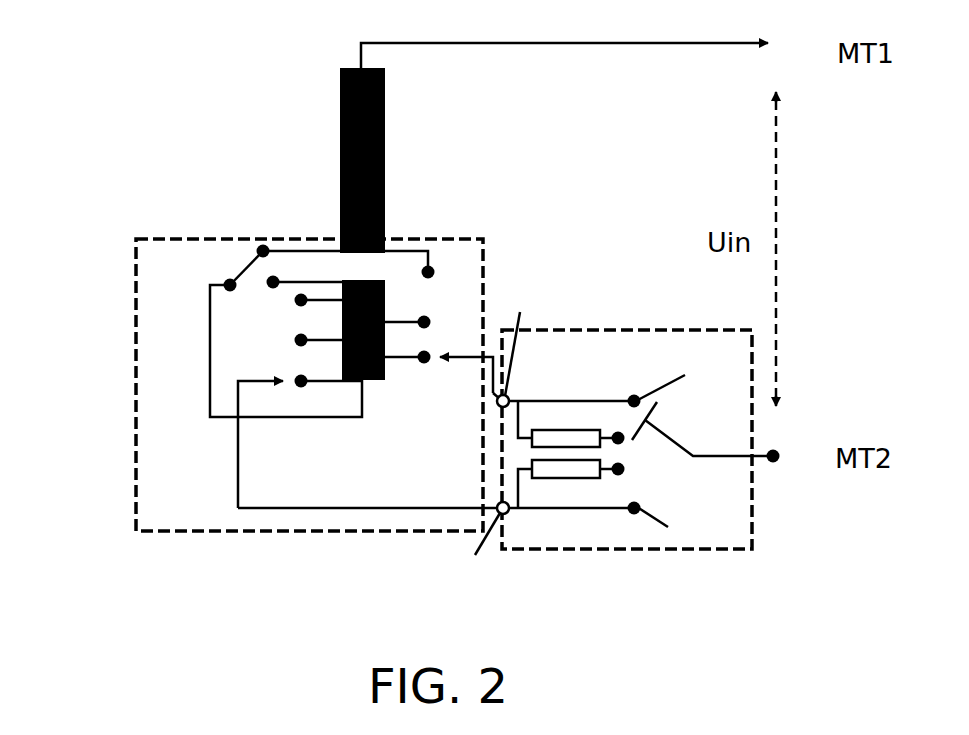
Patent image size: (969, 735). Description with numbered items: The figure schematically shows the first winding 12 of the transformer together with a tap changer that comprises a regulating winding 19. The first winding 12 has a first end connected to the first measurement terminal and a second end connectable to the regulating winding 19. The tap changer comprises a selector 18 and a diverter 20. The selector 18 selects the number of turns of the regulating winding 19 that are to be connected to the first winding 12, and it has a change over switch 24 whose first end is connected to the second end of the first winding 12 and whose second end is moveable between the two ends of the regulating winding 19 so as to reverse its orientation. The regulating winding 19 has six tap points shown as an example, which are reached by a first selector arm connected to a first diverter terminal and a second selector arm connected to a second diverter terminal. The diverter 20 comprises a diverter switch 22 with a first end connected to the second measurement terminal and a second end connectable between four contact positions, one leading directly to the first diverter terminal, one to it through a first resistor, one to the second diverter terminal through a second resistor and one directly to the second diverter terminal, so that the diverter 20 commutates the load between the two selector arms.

The first winding 12 is at (338, 172).
The selector 18 is at (137, 385).
The regulating winding 19 is at (378, 380).
The diverter 20 is at (752, 510).
The diverter switch 22 is at (682, 455).
The change over switch 24 is at (213, 268).